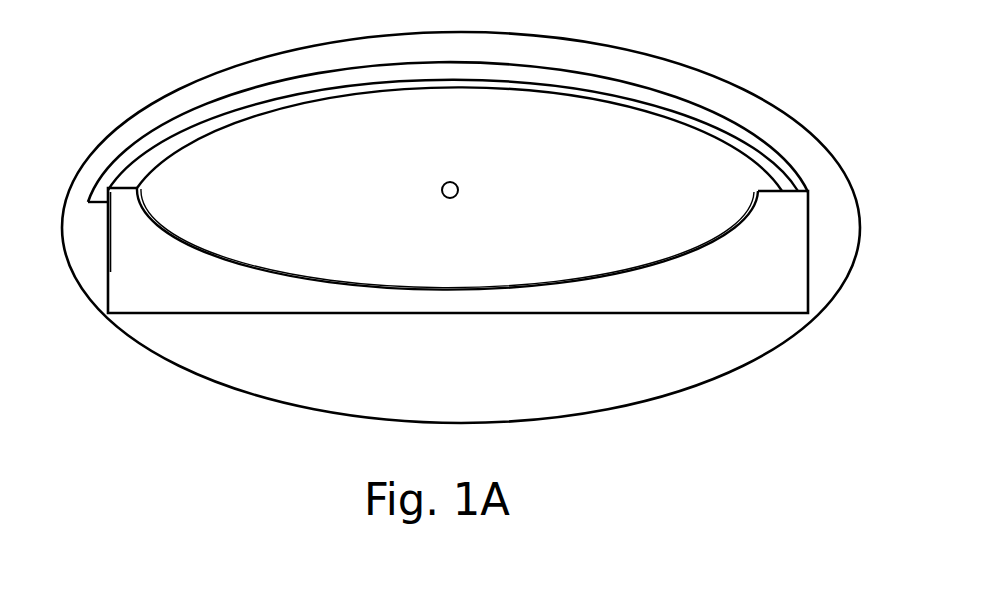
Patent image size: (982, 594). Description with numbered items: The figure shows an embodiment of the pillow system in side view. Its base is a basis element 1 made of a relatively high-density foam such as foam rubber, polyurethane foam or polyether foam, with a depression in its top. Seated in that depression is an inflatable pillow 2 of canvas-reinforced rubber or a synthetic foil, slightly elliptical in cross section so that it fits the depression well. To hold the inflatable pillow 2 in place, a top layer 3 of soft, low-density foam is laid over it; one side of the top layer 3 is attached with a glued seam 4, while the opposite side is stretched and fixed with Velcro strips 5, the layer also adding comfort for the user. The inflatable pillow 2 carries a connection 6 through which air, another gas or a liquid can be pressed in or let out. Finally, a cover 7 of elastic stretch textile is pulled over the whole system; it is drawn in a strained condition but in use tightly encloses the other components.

The basis element 1 is at (792, 310).
The inflatable pillow 2 is at (697, 238).
The top layer 3 is at (718, 108).
The glued seam 4 is at (788, 187).
The Velcro strips 5 is at (103, 260).
The connection 6 is at (458, 187).
The cover 7 is at (735, 370).